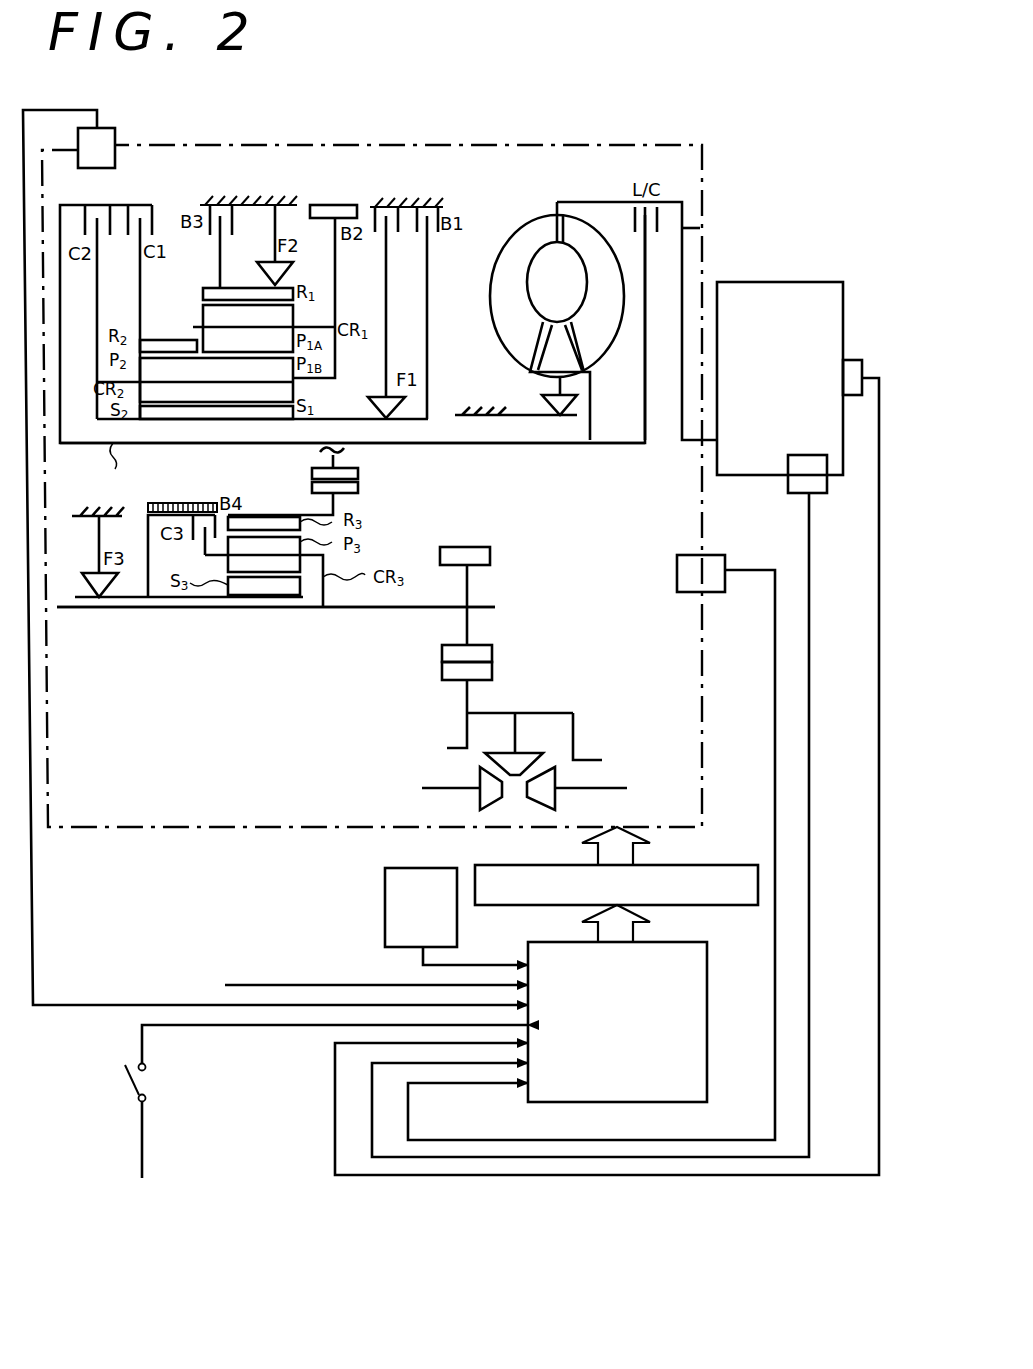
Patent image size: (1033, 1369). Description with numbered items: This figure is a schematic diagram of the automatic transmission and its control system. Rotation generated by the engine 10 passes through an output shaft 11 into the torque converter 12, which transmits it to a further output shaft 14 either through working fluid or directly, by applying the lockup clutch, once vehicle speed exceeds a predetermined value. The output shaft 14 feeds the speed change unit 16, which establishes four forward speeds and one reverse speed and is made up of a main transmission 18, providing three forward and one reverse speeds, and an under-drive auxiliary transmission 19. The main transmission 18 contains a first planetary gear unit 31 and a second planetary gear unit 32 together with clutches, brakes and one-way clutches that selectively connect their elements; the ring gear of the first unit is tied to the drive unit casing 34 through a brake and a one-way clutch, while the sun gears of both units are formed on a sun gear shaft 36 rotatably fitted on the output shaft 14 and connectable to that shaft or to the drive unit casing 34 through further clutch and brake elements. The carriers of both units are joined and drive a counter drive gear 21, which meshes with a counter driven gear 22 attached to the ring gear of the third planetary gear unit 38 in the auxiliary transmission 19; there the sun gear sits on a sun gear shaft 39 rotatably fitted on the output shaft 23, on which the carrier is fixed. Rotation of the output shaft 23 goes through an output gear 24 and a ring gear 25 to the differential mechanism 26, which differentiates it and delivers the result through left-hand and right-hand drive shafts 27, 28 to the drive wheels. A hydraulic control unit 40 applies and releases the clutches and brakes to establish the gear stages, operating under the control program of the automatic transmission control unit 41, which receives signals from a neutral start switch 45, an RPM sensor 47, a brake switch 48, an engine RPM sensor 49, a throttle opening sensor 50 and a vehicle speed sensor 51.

The engine 10 is at (816, 282).
The output shaft 11 is at (700, 228).
The torque converter 12 is at (573, 192).
The output shaft 14 is at (562, 443).
The speed change unit 16 is at (472, 196).
The main transmission 18 is at (343, 156).
The auxiliary transmission 19 is at (208, 660).
The counter drive gear 21 is at (328, 205).
The counter driven gear 22 is at (358, 488).
The output shaft 23 is at (352, 607).
The output gear 24 is at (478, 547).
The ring gear 25 is at (492, 670).
The differential mechanism 26 is at (590, 700).
The left-hand drive shaft 27 is at (452, 788).
The right-hand drive shaft 28 is at (598, 788).
The first planetary gear unit 31 is at (317, 310).
The second planetary gear unit 32 is at (150, 320).
The drive unit casing 34 is at (249, 192).
The sun gear shaft 36 is at (125, 468).
The third planetary gear unit 38 is at (278, 618).
The sun gear shaft 39 is at (166, 597).
The hydraulic control unit 40 is at (668, 865).
The automatic transmission control unit 41 is at (668, 942).
The neutral start switch 45 is at (385, 909).
The RPM sensor 47 is at (115, 128).
The brake switch 48 is at (150, 1085).
The engine RPM sensor 49 is at (856, 360).
The throttle opening sensor 50 is at (820, 493).
The vehicle speed sensor 51 is at (714, 555).